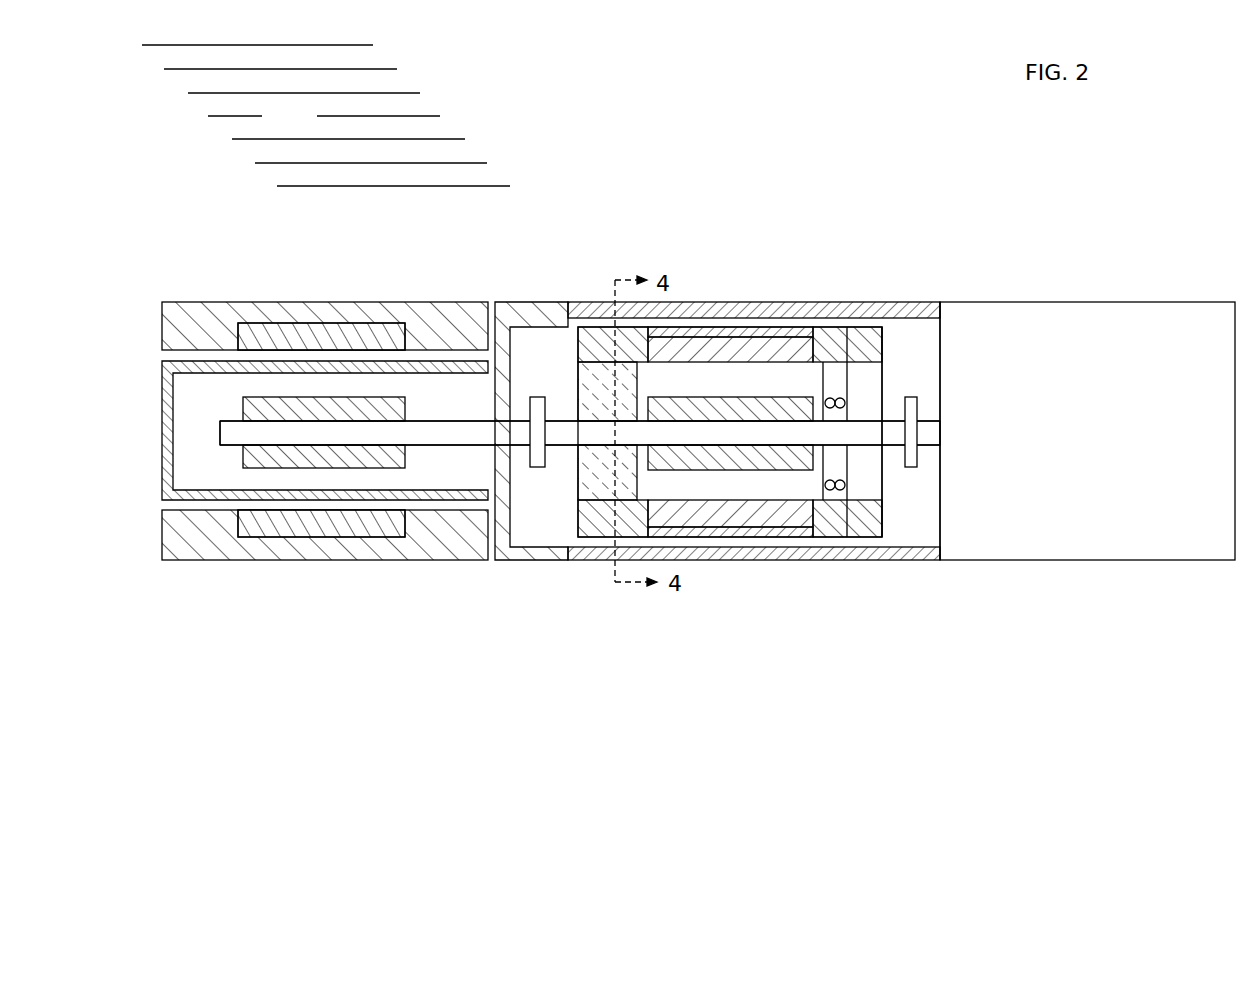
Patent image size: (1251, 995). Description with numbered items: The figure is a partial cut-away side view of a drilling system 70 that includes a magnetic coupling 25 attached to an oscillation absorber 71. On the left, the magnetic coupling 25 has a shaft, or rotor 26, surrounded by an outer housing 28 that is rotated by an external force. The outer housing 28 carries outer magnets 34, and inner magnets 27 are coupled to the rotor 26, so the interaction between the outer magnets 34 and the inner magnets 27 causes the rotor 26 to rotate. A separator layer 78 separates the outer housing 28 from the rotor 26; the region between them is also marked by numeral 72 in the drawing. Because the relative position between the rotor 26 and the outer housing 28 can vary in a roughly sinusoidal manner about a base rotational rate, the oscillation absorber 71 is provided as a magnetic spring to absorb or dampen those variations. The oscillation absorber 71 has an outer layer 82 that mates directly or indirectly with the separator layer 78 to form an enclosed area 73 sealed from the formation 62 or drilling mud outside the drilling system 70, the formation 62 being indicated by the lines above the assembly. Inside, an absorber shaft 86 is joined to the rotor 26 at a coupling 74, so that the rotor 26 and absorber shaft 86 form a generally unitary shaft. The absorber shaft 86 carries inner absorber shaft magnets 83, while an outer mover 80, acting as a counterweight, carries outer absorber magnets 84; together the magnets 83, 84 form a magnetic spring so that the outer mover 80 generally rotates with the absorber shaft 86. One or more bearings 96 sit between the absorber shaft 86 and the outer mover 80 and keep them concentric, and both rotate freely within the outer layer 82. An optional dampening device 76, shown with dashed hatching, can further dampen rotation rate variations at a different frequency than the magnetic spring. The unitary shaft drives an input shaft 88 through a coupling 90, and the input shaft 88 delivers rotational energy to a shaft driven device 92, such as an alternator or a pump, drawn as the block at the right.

The magnetic coupling 25 is at (505, 459).
The rotor 26 is at (223, 432).
The inner magnets 27 is at (405, 405).
The outer housing 28 is at (185, 313).
The outer magnets 34 is at (247, 302).
The formation 62 is at (326, 115).
The drilling system 70 is at (629, 485).
The oscillation absorber 71 is at (734, 410).
The sleeve 72 is at (360, 393).
The enclosed area 73 is at (560, 527).
The coupling 74 is at (543, 467).
The dampening device 76 is at (595, 398).
The separator layer 78 is at (512, 302).
The outer mover 80 is at (672, 316).
The outer layer 82 is at (707, 318).
The inner absorber shaft magnets 83 is at (732, 397).
The outer absorber magnets 84 is at (763, 350).
The absorber shaft 86 is at (893, 437).
The input shaft 88 is at (930, 433).
The coupling 90 is at (913, 412).
The shaft driven device 92 is at (1087, 431).
The bearings 96 is at (833, 373).